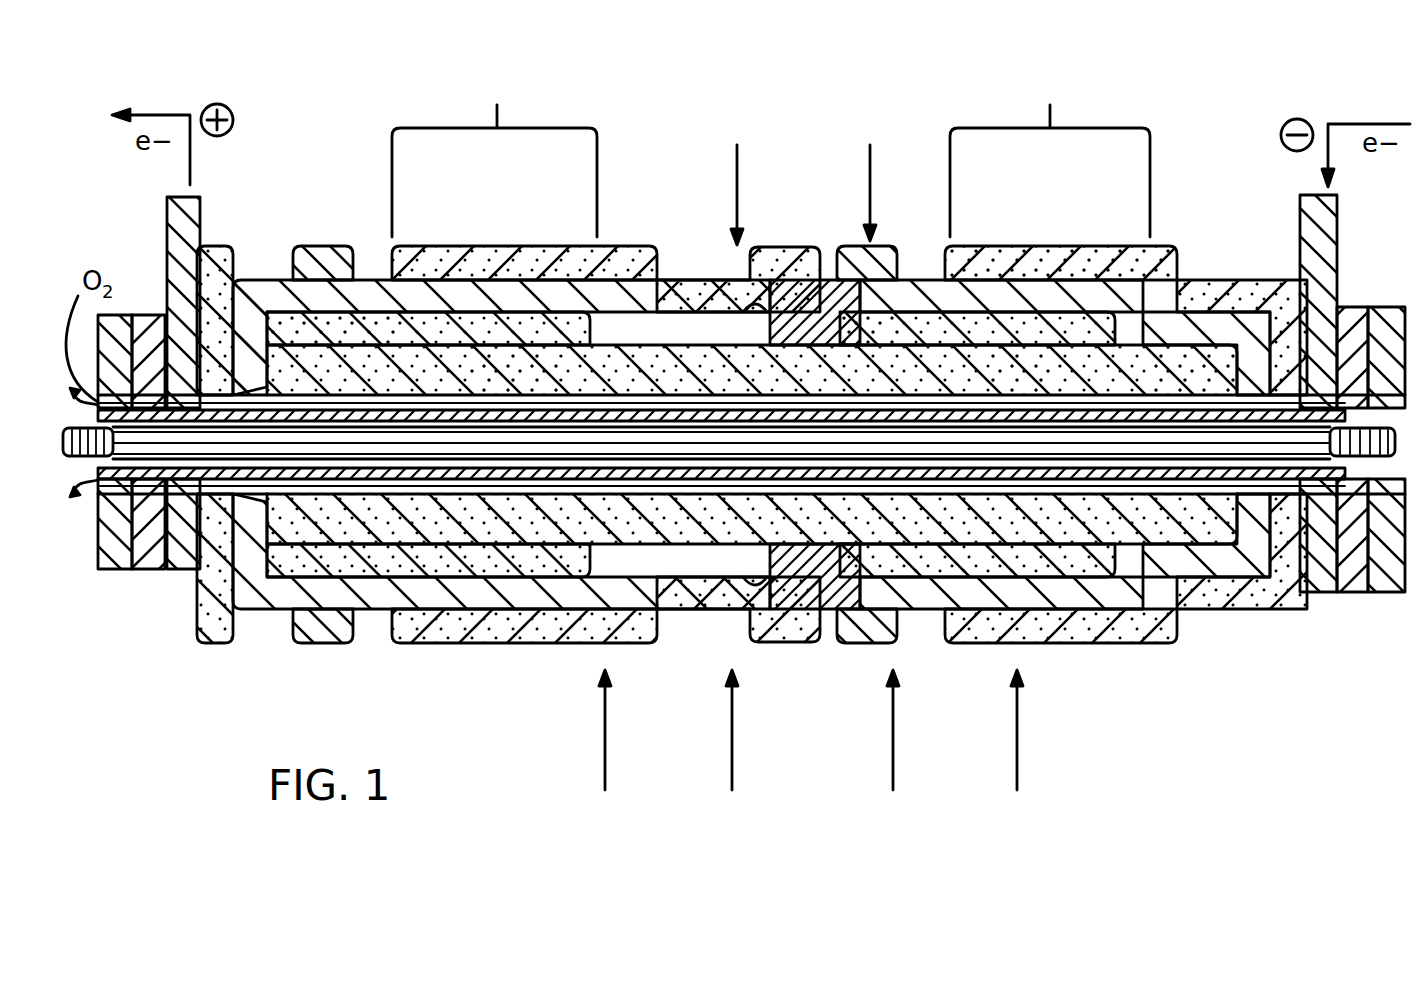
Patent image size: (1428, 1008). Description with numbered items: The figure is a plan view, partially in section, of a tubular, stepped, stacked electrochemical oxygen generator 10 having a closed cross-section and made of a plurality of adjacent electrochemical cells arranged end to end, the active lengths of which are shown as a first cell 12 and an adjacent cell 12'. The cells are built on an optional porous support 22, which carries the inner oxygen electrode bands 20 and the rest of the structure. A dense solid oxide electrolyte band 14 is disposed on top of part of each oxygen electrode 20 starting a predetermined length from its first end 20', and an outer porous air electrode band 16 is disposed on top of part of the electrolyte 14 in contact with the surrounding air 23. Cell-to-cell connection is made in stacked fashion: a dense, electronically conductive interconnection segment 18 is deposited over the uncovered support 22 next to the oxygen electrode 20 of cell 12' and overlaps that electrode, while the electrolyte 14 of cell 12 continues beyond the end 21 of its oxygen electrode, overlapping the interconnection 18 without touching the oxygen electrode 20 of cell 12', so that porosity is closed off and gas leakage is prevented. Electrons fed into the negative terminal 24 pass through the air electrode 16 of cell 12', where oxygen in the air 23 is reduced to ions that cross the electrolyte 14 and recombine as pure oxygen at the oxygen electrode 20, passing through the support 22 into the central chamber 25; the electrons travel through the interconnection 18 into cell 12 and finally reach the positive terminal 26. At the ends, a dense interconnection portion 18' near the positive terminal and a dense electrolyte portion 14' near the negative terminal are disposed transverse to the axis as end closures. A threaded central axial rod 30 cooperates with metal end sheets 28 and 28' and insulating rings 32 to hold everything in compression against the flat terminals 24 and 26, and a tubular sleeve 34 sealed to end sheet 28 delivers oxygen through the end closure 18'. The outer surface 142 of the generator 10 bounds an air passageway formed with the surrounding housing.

The electrochemical oxygen generator 10 is at (294, 728).
The first cell 12 is at (524, 181).
The adjacent cell 12' is at (1061, 181).
The solid oxide electrolyte band 14 is at (752, 439).
The dense electrolyte portion 14' is at (1195, 370).
The air electrode band 16 is at (230, 245).
The interconnection segment 18 is at (751, 417).
The dense inter-connection portion 18' is at (282, 337).
The oxygen electrode band 20 is at (691, 444).
The first end of oxygen electrode 20' is at (583, 349).
The end of the oxygen electrode 21 is at (592, 350).
The porous support 22 is at (515, 370).
The air 23 is at (863, 172).
The negative terminal 24 is at (1340, 236).
The central chamber 25 is at (999, 404).
The positive terminal 26 is at (184, 232).
The metal end sheet 28 is at (115, 484).
The metal end sheet 28' is at (1396, 484).
The central axial rod 30 is at (642, 474).
The insulating ring 32 is at (150, 572).
The tubular sleeve 34 is at (1012, 480).
The outer surface of the generator 142 is at (456, 642).